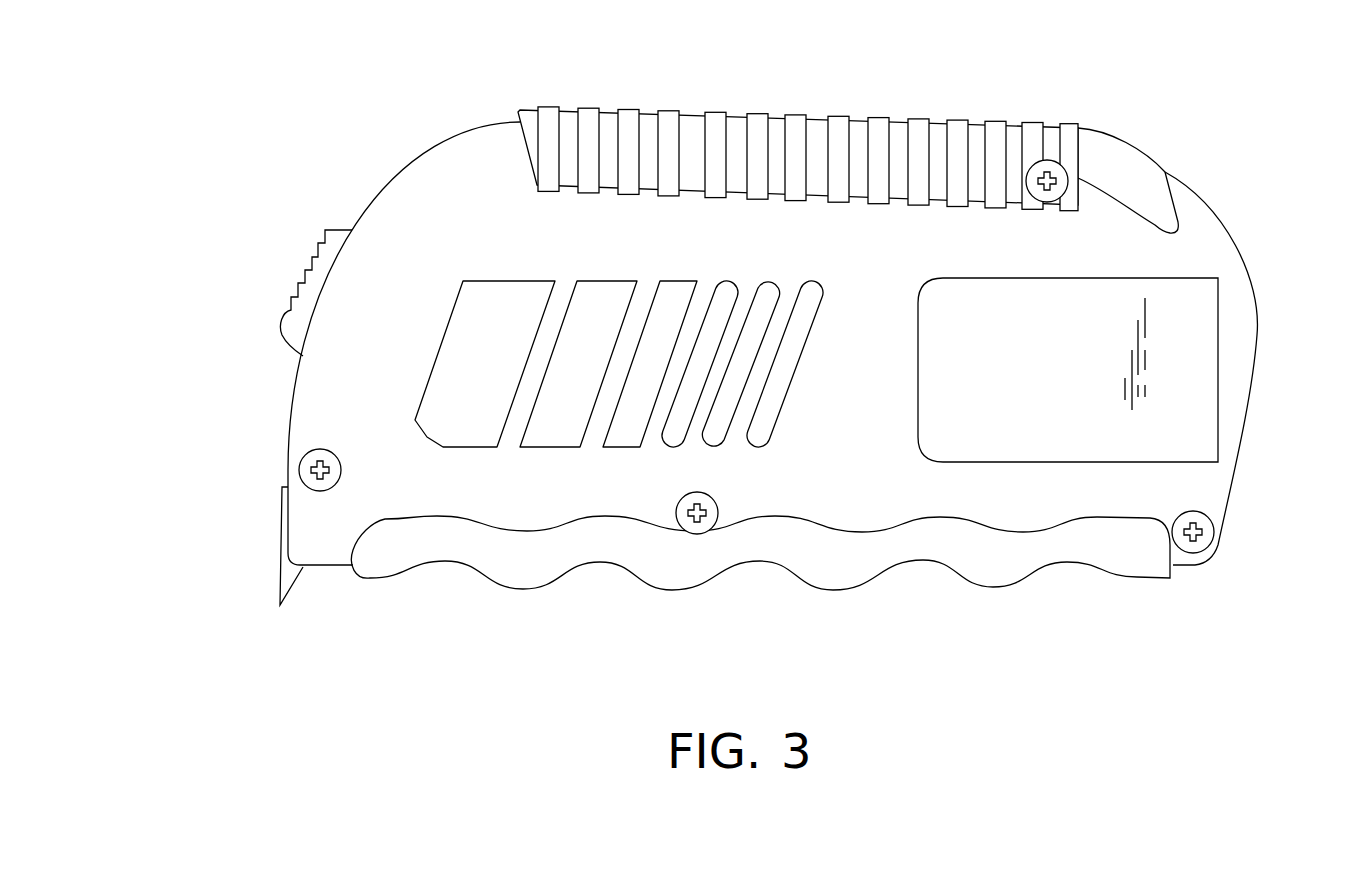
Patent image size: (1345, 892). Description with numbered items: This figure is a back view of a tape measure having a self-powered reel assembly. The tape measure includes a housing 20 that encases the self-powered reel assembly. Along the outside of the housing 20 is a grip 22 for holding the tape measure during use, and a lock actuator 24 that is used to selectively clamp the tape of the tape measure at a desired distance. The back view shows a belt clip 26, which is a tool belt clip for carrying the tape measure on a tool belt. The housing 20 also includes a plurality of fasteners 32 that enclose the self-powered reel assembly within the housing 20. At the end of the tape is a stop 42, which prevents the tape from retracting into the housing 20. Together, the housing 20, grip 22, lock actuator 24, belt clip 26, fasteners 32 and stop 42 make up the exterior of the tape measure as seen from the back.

The housing 20 is at (1192, 224).
The grip 22 is at (858, 133).
The lock actuator 24 is at (307, 270).
The belt clip 26 is at (1186, 334).
The fasteners 32 is at (1062, 165).
The stop 42 is at (280, 578).